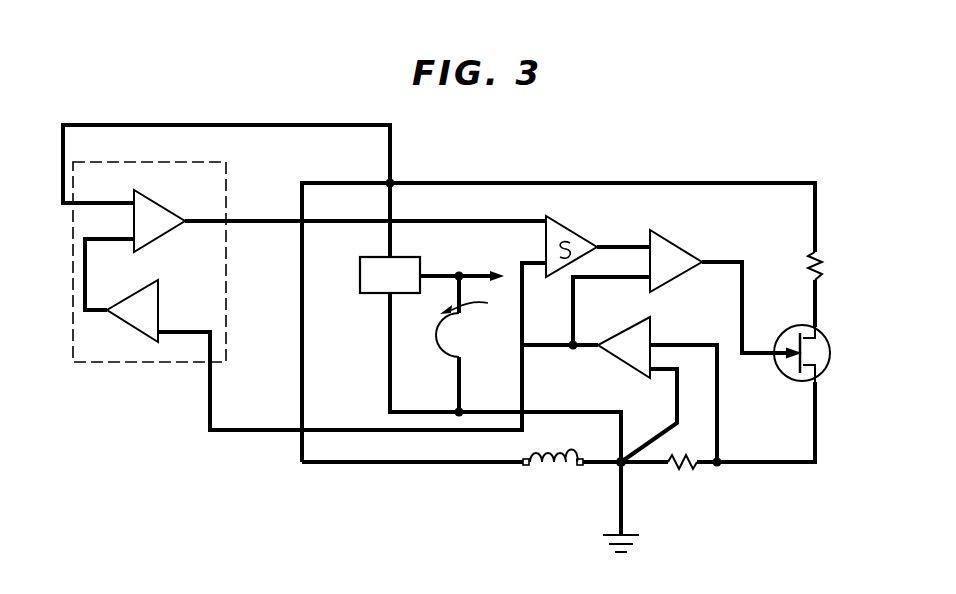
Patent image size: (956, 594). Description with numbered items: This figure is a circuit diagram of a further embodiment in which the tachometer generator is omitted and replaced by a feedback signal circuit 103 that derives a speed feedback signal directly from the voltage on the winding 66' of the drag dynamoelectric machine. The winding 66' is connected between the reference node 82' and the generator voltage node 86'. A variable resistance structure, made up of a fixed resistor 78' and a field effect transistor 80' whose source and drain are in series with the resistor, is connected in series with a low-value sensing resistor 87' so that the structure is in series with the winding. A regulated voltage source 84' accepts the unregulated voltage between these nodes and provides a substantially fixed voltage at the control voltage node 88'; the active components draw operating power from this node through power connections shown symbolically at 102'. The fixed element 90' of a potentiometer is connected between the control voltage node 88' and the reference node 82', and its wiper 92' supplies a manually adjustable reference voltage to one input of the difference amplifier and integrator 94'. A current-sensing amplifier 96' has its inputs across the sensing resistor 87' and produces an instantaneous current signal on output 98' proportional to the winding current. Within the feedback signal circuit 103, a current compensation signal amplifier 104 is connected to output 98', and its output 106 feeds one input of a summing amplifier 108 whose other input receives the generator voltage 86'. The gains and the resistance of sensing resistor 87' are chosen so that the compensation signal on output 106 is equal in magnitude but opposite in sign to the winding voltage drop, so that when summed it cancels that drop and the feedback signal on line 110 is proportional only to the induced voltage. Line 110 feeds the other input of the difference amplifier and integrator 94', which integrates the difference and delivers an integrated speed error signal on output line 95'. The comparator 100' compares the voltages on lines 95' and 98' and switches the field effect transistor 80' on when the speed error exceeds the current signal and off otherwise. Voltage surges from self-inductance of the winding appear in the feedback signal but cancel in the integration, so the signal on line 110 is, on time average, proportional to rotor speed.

The feedback signal circuit 103 is at (151, 140).
The summing amplifier 108 is at (167, 196).
The line 110 is at (269, 219).
The output 106 is at (84, 273).
The current compensation signal amplifier 104 is at (133, 330).
The generator voltage node 86' is at (411, 155).
The control voltage node 88' is at (474, 215).
The power connections 102' is at (489, 258).
The regulated voltage source 84' is at (369, 302).
The wiper 92' is at (470, 345).
The fixed element 90' is at (478, 304).
The difference amplifier and integrator 94' is at (574, 210).
The output line 95' is at (623, 195).
The comparator 100' is at (676, 217).
The instantaneous current signal output 98' is at (602, 315).
The current-sensing amplifier 96' is at (653, 339).
The fixed resistor 78' is at (843, 244).
The field effect transistor 80' is at (828, 345).
The winding 66' is at (552, 503).
The reference node 82' is at (637, 509).
The sensing resistor 87' is at (692, 505).